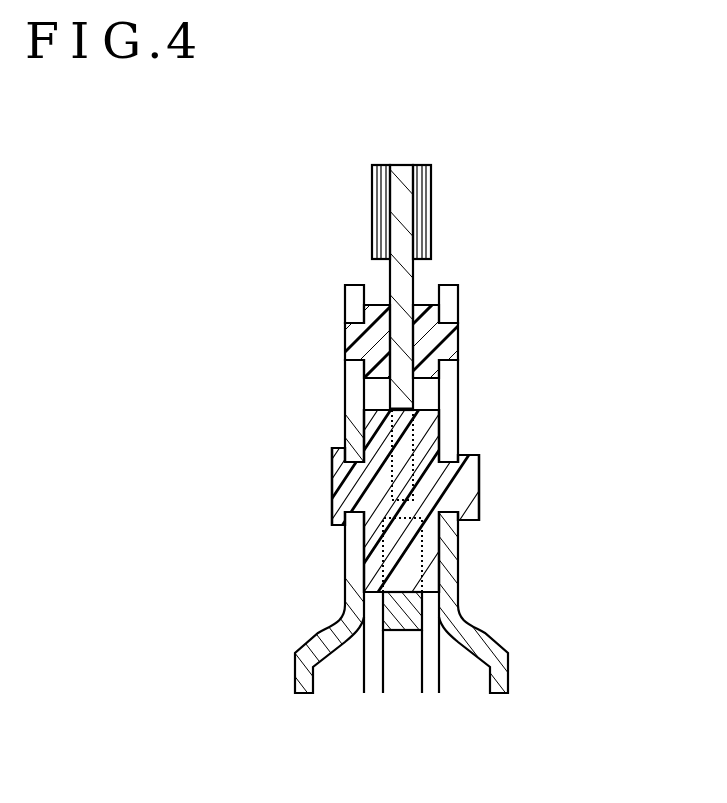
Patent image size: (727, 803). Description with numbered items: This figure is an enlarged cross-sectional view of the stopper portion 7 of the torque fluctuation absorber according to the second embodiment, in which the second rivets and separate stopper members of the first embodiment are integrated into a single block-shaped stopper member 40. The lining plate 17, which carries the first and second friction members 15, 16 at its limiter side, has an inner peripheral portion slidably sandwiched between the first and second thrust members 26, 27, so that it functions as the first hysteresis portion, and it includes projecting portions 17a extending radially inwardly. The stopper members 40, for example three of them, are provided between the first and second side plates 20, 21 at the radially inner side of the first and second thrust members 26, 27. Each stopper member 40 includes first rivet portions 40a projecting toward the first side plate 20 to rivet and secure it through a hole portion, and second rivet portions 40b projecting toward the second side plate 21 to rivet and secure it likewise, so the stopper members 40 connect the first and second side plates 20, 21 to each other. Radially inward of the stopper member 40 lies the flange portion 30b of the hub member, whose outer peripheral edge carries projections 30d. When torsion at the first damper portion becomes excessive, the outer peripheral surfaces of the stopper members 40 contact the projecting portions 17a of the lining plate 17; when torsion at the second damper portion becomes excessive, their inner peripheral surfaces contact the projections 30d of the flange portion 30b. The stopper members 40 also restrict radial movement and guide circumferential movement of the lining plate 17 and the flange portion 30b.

The stopper portion 7 is at (513, 492).
The first friction member 15 is at (378, 213).
The second friction member 16 is at (432, 213).
The lining plate 17 is at (403, 178).
The projecting portion 17a is at (414, 440).
The first side plate 20 is at (327, 633).
The second side plate 21 is at (482, 635).
The first thrust member 26 is at (360, 345).
The second thrust member 27 is at (445, 340).
The flange portion 30b is at (405, 670).
The projection 30d is at (383, 550).
The stopper member 40 is at (368, 436).
The first rivet portion 40a is at (338, 487).
The second rivet portion 40b is at (466, 493).